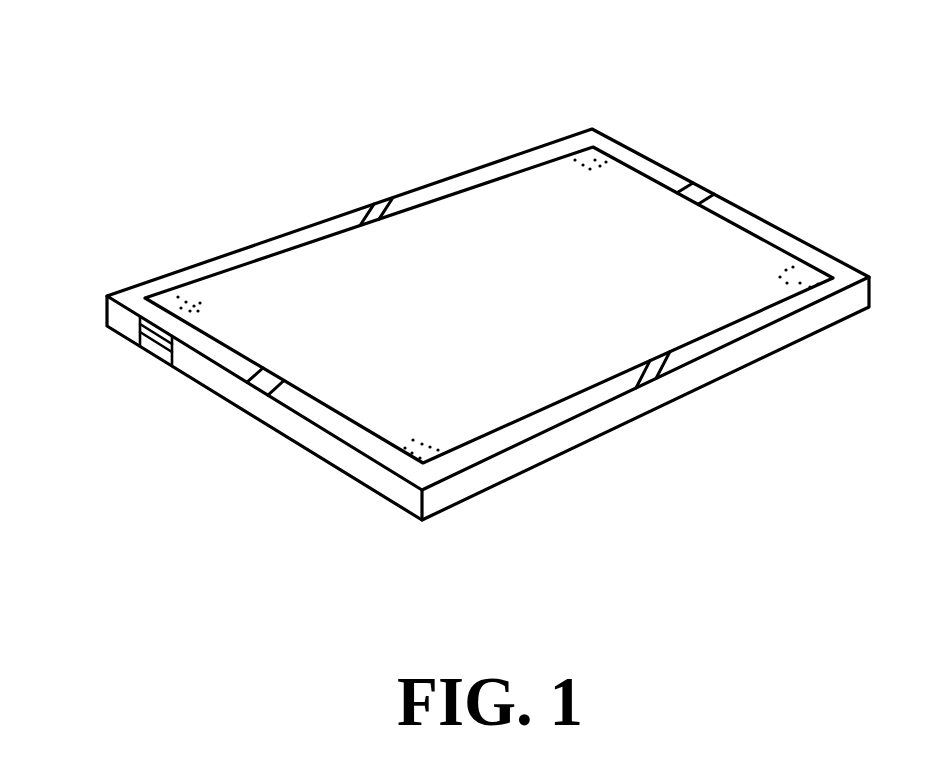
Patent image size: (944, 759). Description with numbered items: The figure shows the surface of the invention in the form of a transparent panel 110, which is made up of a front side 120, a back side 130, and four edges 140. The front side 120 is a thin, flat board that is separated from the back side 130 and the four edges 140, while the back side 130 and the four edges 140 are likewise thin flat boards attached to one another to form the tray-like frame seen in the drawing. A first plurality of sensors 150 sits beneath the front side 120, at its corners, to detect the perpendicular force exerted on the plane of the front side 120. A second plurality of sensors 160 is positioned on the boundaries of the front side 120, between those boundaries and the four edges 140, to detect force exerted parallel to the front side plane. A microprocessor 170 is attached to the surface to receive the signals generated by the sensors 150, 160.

The transparent panel 110 is at (418, 523).
The front side 120 is at (507, 207).
The back side 130 is at (565, 453).
The four edges 140 is at (340, 453).
The first plurality of sensors 150 is at (174, 293).
The second plurality of sensors 160 is at (375, 203).
The microprocessor 170 is at (140, 344).